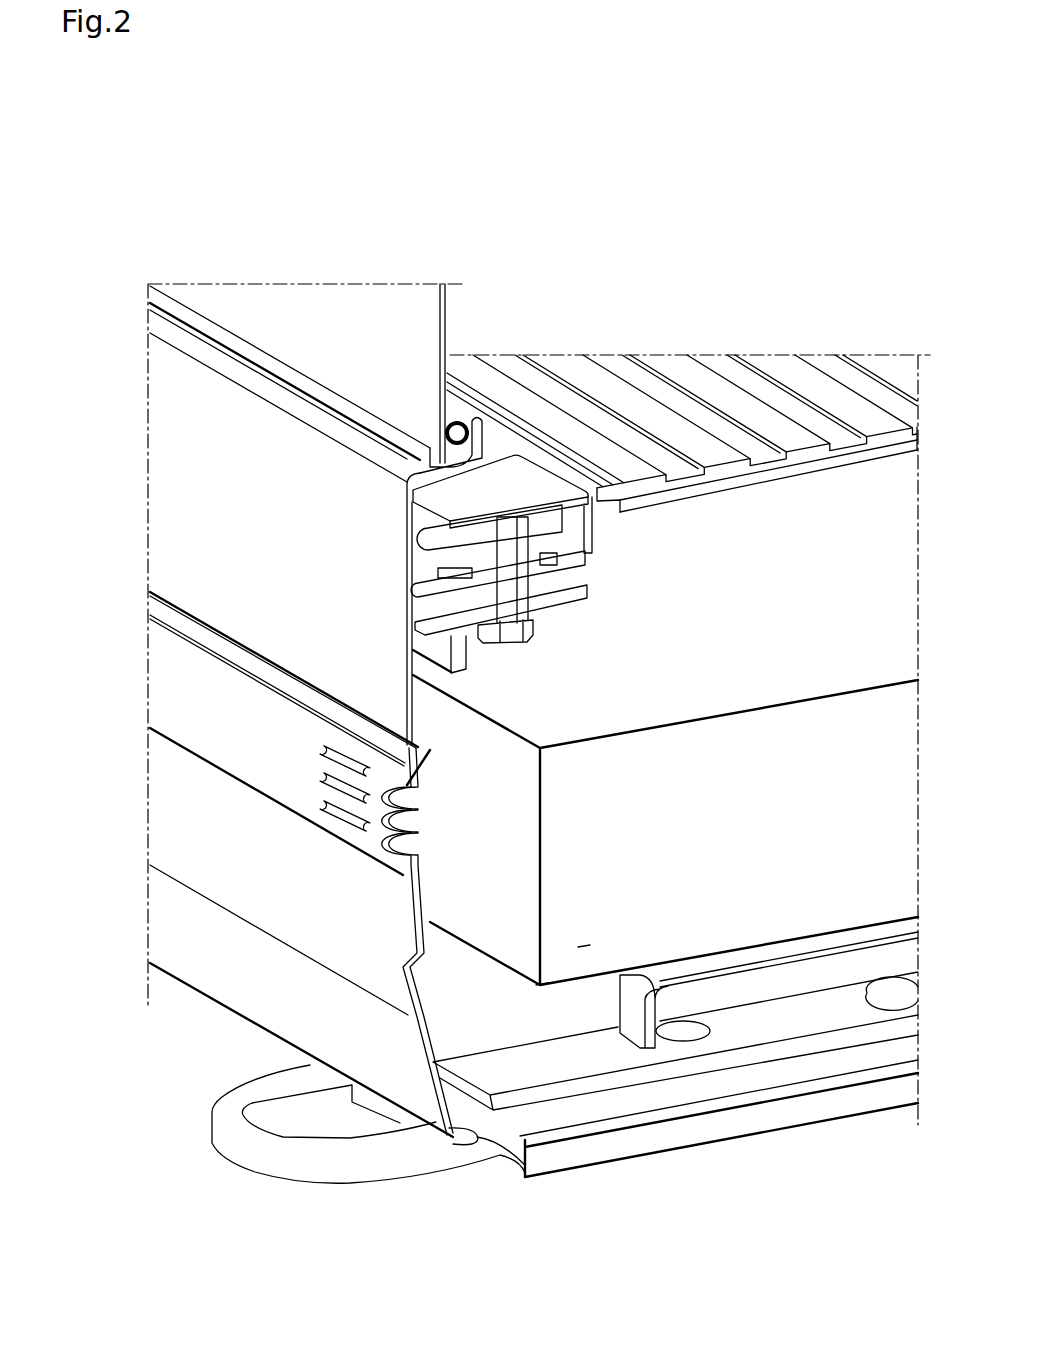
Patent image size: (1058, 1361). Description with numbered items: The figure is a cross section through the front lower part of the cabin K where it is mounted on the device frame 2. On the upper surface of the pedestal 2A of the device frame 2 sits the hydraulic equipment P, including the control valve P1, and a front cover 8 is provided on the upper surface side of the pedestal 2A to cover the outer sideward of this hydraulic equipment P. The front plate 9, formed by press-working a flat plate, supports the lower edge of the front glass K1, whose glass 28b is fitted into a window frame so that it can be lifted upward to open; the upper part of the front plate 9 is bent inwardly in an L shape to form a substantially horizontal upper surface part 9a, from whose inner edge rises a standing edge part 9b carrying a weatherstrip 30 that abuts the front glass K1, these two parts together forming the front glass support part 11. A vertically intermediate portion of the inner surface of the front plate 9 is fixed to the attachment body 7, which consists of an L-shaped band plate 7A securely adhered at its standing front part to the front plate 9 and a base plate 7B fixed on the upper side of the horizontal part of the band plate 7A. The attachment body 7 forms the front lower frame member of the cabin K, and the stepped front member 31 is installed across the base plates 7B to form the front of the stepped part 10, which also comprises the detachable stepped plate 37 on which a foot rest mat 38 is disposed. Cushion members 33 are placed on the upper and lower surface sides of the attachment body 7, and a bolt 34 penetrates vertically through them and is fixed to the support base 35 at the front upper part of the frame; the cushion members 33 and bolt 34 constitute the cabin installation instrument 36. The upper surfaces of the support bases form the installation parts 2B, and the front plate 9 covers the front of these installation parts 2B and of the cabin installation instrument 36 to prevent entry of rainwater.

The device frame 2 is at (667, 1168).
The pedestal 2A is at (737, 1123).
The installation parts 2B is at (483, 678).
The attachment body 7 is at (435, 596).
The band plate 7A is at (445, 604).
The base plate 7B is at (438, 582).
The front cover 8 is at (223, 997).
The front plate 9 is at (178, 551).
The upper surface part 9a is at (407, 465).
The standing edge part 9b is at (447, 435).
The stepped part 10 is at (756, 372).
The front glass support part 11 is at (284, 407).
The glass 28b is at (412, 312).
The weatherstrip 30 is at (464, 420).
The stepped front member 31 is at (584, 480).
The cushion members 33 is at (423, 587).
The bolt 34 is at (503, 603).
The support base 35 is at (470, 637).
The cabin installation instrument 36 is at (580, 574).
The stepped plate 37 is at (812, 467).
The foot rest mat 38 is at (893, 446).
The cabin K is at (176, 635).
The front glass K1 is at (200, 361).
The hydraulic equipment P is at (545, 1011).
The control valve P1 is at (583, 947).